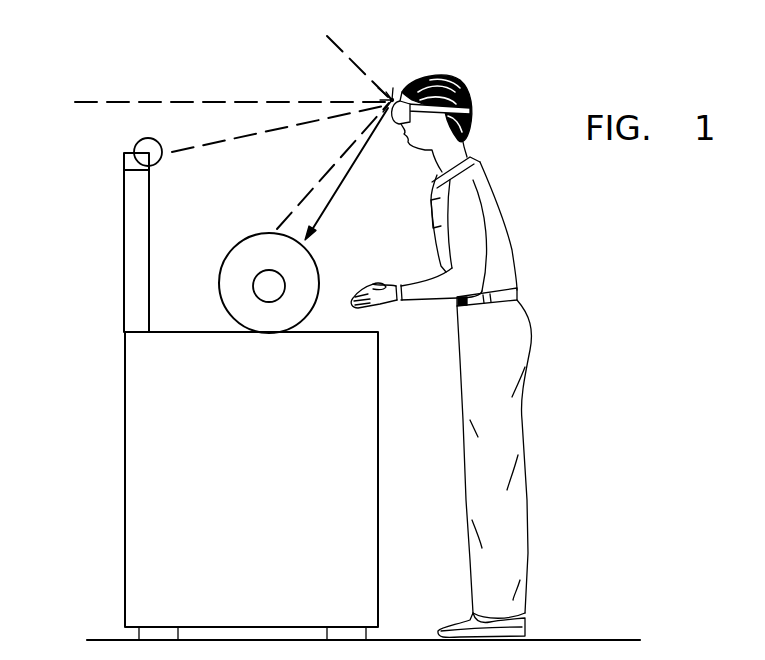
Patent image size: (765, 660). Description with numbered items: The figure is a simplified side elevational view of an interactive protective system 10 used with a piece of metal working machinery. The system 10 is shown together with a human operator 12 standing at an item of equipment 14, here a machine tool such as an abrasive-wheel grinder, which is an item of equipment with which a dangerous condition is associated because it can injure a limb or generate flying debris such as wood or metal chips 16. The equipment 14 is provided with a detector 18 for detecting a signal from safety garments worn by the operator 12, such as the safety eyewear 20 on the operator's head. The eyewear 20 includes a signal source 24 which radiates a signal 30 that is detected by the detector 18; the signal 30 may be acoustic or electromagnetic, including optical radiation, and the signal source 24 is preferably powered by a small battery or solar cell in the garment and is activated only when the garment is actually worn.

The interactive protective system 10 is at (481, 77).
The human operator 12 is at (503, 248).
The item of equipment 14 is at (263, 473).
The flying debris 16 is at (325, 222).
The detector 18 is at (136, 146).
The safety eyewear 20 is at (391, 108).
The signal source 24 is at (396, 98).
The signal 30 is at (196, 101).